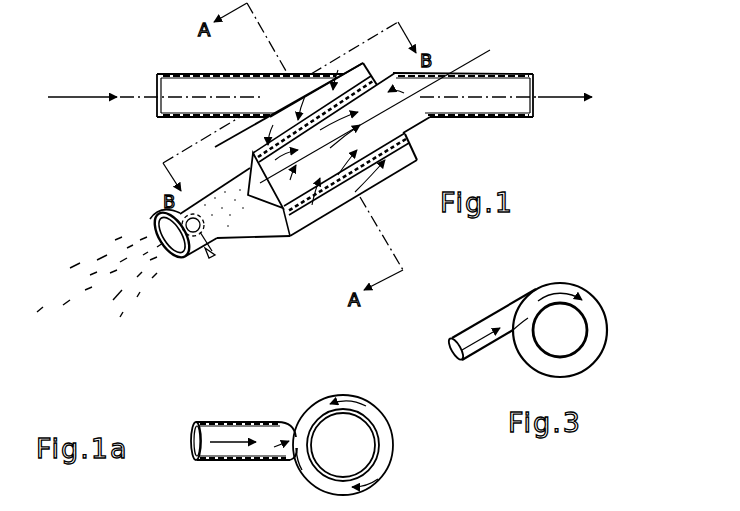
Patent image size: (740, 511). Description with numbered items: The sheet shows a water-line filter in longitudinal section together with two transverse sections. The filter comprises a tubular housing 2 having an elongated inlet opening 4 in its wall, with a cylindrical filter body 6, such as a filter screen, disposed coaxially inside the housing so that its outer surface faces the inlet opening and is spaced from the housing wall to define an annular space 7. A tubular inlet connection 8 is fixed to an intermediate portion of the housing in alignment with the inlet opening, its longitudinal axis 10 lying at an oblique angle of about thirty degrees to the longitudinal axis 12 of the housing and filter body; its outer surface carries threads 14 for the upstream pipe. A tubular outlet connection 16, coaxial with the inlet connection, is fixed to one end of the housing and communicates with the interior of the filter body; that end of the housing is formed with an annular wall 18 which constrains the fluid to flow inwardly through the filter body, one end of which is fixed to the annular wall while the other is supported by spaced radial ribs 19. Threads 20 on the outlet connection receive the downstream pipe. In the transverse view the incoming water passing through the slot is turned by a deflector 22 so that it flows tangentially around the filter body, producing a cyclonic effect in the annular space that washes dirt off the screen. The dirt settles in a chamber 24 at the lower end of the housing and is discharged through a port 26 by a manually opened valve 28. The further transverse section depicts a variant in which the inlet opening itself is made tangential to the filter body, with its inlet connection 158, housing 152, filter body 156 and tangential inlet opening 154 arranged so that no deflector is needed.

In FIG. 1, the tubular housing 2 is at (377, 188).
In FIG. 1, the inlet opening 4 is at (318, 96).
In FIG. 1A, the inlet opening 4 is at (290, 430).
In FIG. 1, the cylindrical filter body 6 is at (404, 165).
In FIG. 1, the annular space 7 is at (327, 202).
In FIG. 1A, the annular space 7 is at (378, 427).
In FIG. 1, the tubular inlet connection 8 is at (237, 74).
In FIG. 1A, the tubular inlet connection 8 is at (207, 422).
In FIG. 1, the longitudinal axis of the inlet connection 10 is at (176, 97).
In FIG. 1, the longitudinal axis of housing 12 is at (466, 63).
In FIG. 1, the threads 14 is at (202, 118).
In FIG. 1, the tubular outlet connection 16 is at (493, 118).
In FIG. 1, the annular wall 18 is at (407, 138).
In FIG. 1, the radial ribs 19 is at (263, 227).
In FIG. 1, the threads 20 is at (492, 74).
In FIG. 1A, the deflector 22 is at (298, 468).
In FIG. 1, the chamber 24 is at (241, 224).
In FIG. 1, the port 26 is at (178, 259).
In FIG. 1, the valve 28 is at (150, 219).
In FIG. 3, the outer ring 152 is at (601, 301).
In FIG. 3, the tube junction 154 is at (515, 338).
In FIG. 3, the inner ring 156 is at (586, 342).
In FIG. 3, the tangential tube 158 is at (466, 330).